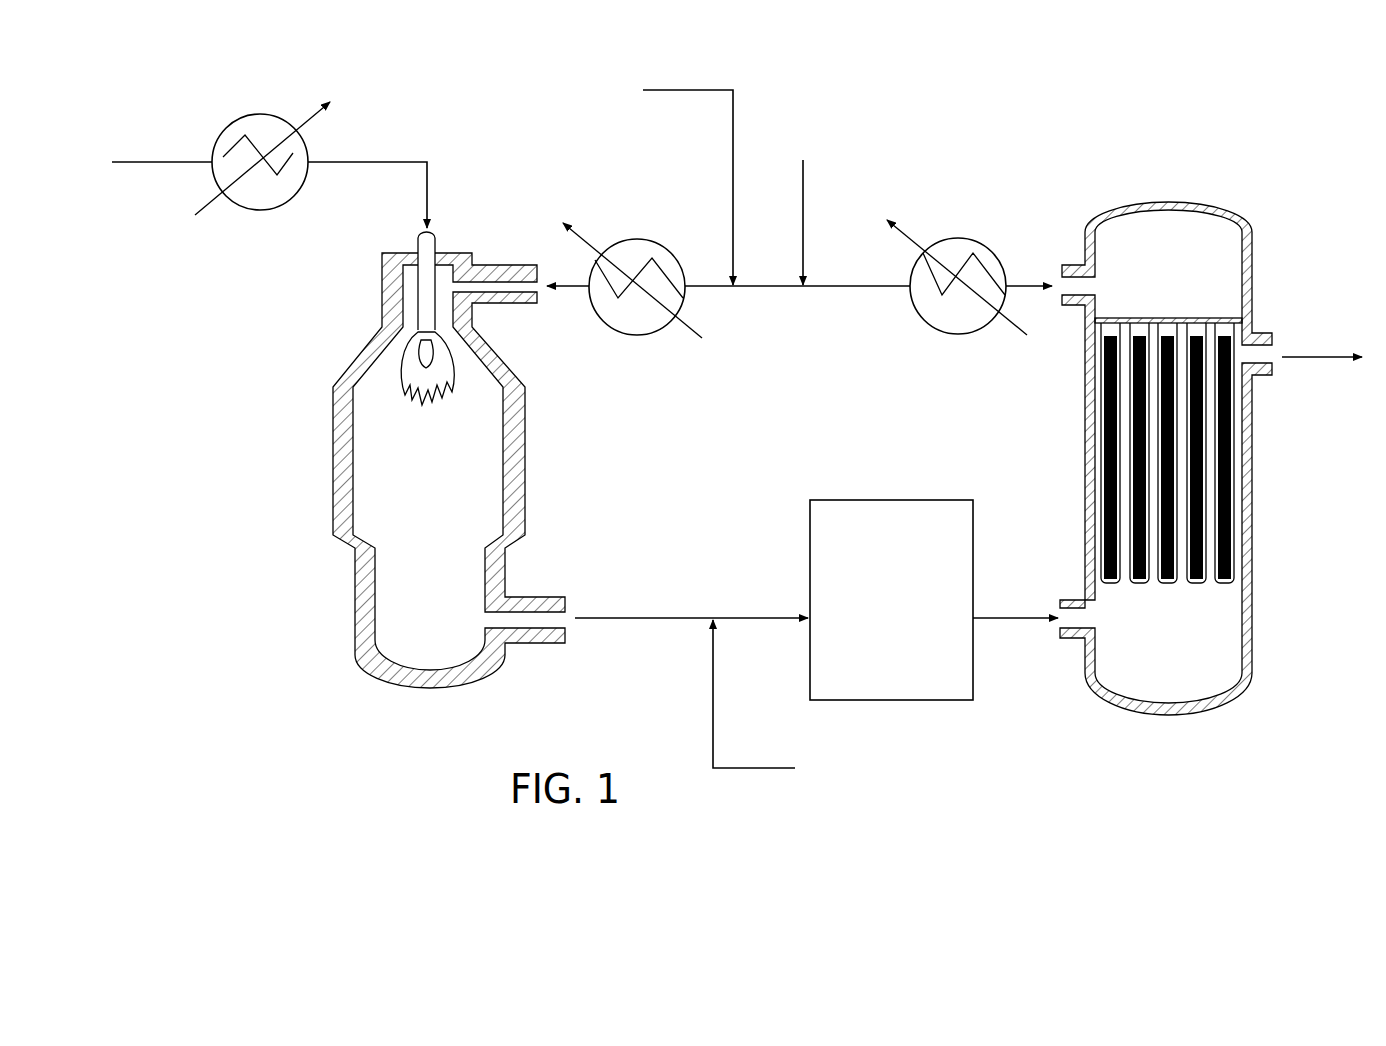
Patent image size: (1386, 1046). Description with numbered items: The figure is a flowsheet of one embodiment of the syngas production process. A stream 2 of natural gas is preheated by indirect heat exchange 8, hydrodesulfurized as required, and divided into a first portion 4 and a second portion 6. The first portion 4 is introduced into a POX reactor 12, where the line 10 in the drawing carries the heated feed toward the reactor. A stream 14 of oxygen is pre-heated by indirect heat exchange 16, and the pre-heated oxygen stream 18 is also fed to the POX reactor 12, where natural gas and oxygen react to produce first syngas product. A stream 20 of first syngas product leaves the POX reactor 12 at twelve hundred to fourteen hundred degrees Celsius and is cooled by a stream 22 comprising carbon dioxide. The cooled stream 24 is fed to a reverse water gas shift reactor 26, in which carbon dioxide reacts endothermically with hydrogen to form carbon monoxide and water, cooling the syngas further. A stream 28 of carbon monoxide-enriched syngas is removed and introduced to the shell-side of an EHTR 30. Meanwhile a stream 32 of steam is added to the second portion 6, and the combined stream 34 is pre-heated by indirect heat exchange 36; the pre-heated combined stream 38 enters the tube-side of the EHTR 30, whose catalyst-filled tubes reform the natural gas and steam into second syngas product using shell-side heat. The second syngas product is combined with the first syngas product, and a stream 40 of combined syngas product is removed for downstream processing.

The stream of natural gas 2 is at (655, 92).
The first portion 4 is at (713, 285).
The second portion 6 is at (768, 285).
The indirect heat exchange 8 is at (612, 328).
The heated feed line to furnace 10 is at (562, 285).
The POX reactor 12 is at (332, 468).
The stream of oxygen 14 is at (148, 160).
The indirect heat exchange 16 is at (270, 208).
The pre-heated oxygen stream 18 is at (385, 160).
The stream of first syngas product 20 is at (625, 618).
The stream comprising carbon dioxide 22 is at (758, 768).
The cooled stream 24 is at (773, 618).
The reverse water gas shift reactor 26 is at (862, 500).
The stream of carbon monoxide-enriched syngas 28 is at (1010, 617).
The EHTR 30 is at (1253, 485).
The stream of steam 32 is at (805, 188).
The combined stream 34 is at (843, 285).
The indirect heat exchange 36 is at (960, 238).
The pre-heated combined stream 38 is at (1027, 283).
The stream of combined syngas product 40 is at (1335, 355).